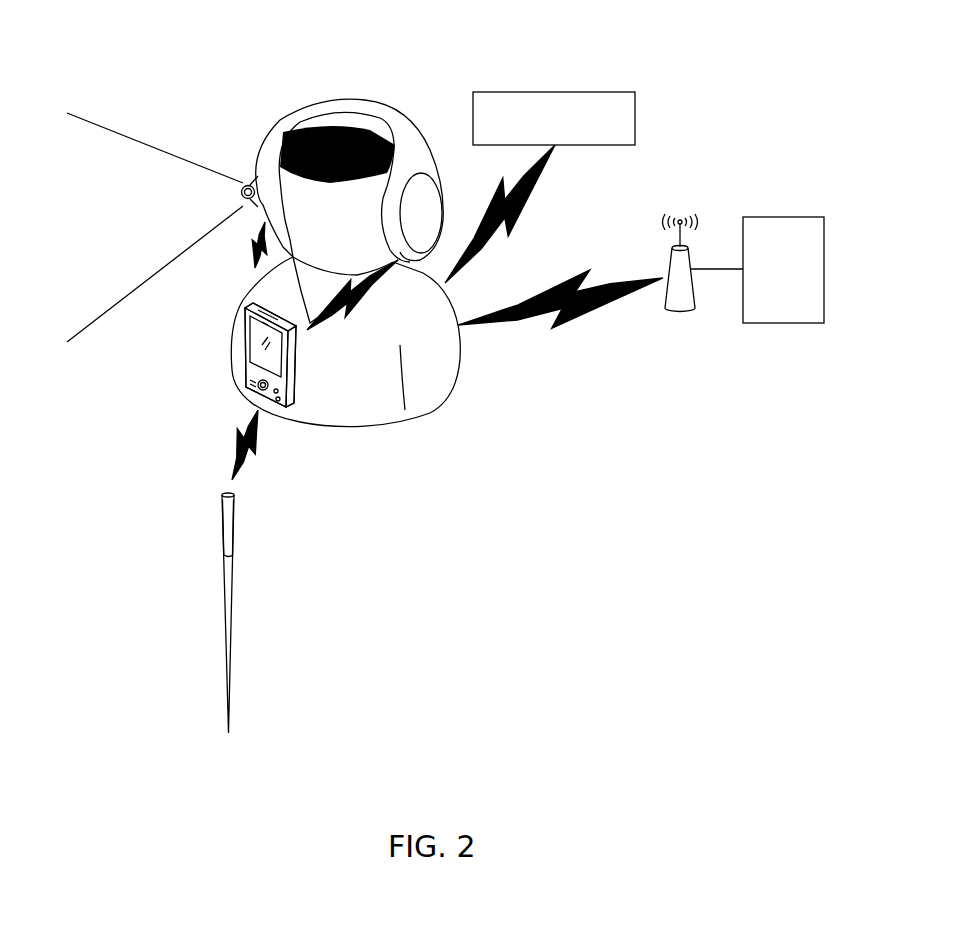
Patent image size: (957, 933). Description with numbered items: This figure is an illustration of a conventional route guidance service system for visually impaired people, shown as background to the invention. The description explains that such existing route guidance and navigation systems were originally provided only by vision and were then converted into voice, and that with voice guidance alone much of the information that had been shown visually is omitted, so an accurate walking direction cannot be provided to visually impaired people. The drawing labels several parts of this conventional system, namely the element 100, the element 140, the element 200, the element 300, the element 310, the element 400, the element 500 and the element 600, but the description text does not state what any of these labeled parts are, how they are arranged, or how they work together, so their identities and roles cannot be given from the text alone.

The headset 100 is at (260, 181).
The earphone unit 140 is at (423, 213).
The portable terminal 200 is at (257, 345).
The antenna 300 is at (277, 613).
The antenna tip 310 is at (228, 522).
The GPS satellite 400 is at (556, 92).
The base station 500 is at (680, 311).
The server 600 is at (783, 217).